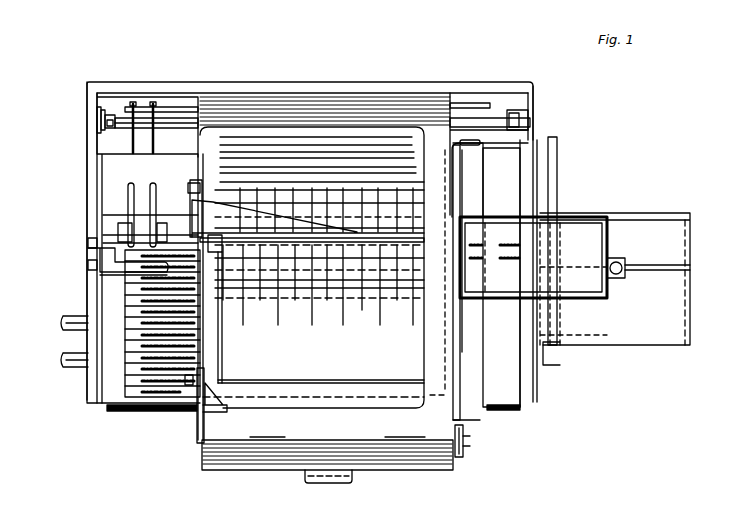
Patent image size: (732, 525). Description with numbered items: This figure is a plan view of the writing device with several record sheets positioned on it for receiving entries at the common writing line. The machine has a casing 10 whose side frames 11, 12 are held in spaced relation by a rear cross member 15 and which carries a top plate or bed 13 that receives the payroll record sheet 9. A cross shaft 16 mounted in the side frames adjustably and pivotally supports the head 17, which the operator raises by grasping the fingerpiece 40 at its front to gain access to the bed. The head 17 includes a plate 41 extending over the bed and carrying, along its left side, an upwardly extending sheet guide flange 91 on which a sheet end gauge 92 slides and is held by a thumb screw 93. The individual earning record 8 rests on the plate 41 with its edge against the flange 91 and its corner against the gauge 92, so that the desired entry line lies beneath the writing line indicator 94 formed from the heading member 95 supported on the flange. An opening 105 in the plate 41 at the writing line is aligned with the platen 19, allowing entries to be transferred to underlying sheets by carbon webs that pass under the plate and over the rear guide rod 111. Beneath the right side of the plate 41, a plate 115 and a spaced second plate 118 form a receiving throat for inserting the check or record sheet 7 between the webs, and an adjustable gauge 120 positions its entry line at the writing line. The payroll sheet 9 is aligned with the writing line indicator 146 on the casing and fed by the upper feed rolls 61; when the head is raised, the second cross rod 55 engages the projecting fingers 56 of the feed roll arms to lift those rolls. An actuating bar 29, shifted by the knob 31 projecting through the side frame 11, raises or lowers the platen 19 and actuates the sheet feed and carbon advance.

The check or record sheet 7 is at (607, 232).
The individual earning record 8 is at (398, 100).
The payroll record sheet 9 is at (107, 402).
The casing 10 is at (87, 183).
The side frame 11 is at (97, 145).
The side frame 12 is at (535, 130).
The top plate or bed 13 is at (515, 408).
The rear cross member 15 is at (330, 82).
The cross shaft 16 is at (497, 116).
The head or sheet holder 17 is at (259, 466).
The support or platen 19 is at (357, 270).
The actuating bar 29 is at (97, 115).
The knob 31 is at (63, 322).
The fingerpiece 40 is at (338, 484).
The support or plate 41 is at (358, 425).
The second cross rod 55 is at (465, 103).
The projecting fingers 56 is at (152, 102).
The upper feed rolls 61 is at (160, 246).
The sheet guide flange 91 is at (197, 430).
The sheet end gauge 92 is at (224, 410).
The thumb screw 93 is at (188, 385).
The writing line indicator 94 is at (207, 263).
The heading member 95 is at (306, 211).
The opening 105 is at (446, 220).
The rear guide rod 111 is at (480, 142).
The plate 115 is at (457, 352).
The second plate 118 is at (480, 410).
The adjustable gauge 120 is at (652, 342).
The writing line indicator 146 is at (107, 271).